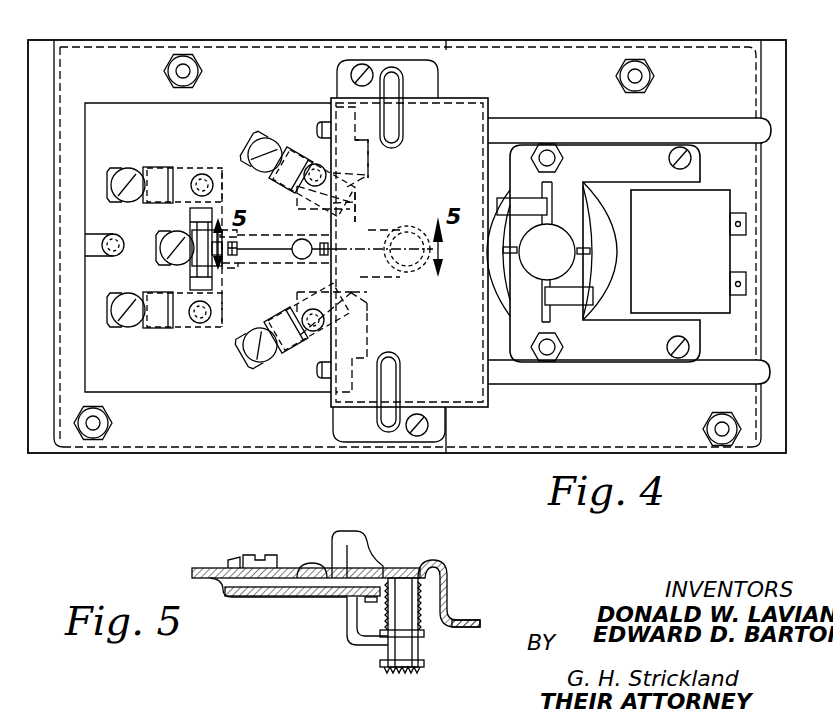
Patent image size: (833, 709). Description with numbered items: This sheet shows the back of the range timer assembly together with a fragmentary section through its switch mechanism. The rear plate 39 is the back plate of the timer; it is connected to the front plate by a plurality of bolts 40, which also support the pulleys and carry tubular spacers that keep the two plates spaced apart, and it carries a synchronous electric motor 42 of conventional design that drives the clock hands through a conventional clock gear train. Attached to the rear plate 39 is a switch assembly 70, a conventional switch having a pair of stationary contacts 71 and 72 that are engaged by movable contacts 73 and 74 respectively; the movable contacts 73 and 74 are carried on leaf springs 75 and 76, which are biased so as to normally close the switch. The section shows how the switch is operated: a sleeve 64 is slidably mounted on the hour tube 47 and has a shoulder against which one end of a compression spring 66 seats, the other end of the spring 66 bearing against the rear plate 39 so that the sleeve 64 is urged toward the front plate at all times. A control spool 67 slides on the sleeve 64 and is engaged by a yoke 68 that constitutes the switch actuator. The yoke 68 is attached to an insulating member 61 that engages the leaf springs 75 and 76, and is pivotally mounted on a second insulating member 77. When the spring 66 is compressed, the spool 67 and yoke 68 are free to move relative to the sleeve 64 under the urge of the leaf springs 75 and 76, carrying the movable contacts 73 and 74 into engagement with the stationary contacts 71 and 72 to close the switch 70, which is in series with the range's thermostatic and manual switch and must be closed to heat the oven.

In FIG. 4, the rear plate 39 is at (726, 58).
In FIG. 5, the rear plate 39 is at (480, 622).
In FIG. 4, the bolts 40 is at (164, 71).
In FIG. 4, the synchronous electric motor 42 is at (656, 160).
In FIG. 5, the hour tube 47 is at (420, 583).
In FIG. 4, the insulating member 61 is at (230, 173).
In FIG. 5, the insulating member 61 is at (272, 596).
In FIG. 5, the sleeve 64 is at (410, 610).
In FIG. 5, the compression spring 66 is at (437, 582).
In FIG. 5, the control spool 67 is at (420, 651).
In FIG. 4, the yoke 68 is at (409, 279).
In FIG. 5, the yoke 68 is at (347, 645).
In FIG. 4, the switch assembly 70 is at (258, 362).
In FIG. 5, the switch assembly 70 is at (277, 556).
In FIG. 4, the stationary contact 71 is at (368, 175).
In FIG. 5, the stationary contact 71 is at (236, 568).
In FIG. 4, the stationary contact 72 is at (368, 320).
In FIG. 4, the movable contact 73 is at (367, 197).
In FIG. 5, the movable contact 73 is at (373, 577).
In FIG. 4, the movable contact 74 is at (363, 308).
In FIG. 4, the leaf spring 75 is at (148, 168).
In FIG. 5, the leaf spring 75 is at (374, 609).
In FIG. 4, the leaf spring 76 is at (152, 316).
In FIG. 5, the insulating member 77 is at (202, 568).